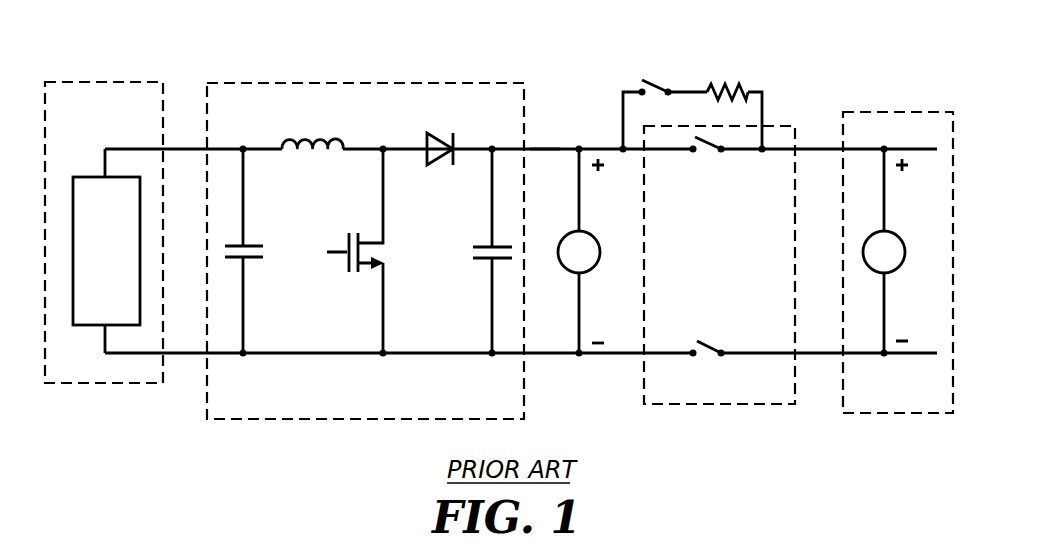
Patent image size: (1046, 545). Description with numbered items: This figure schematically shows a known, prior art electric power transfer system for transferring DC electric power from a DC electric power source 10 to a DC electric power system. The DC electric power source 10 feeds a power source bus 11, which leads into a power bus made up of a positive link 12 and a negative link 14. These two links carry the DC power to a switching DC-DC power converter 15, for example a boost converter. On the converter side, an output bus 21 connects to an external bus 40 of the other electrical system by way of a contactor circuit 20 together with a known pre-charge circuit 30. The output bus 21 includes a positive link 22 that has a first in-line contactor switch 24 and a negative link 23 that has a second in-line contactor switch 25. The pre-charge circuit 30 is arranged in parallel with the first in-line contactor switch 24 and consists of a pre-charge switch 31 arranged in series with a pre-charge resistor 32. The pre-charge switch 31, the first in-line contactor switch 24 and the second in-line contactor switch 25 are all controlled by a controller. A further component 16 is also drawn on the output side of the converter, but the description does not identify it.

The DC electric power source 10 is at (120, 266).
The power source bus 11 is at (146, 145).
The positive link 12 is at (173, 151).
The negative link 14 is at (178, 355).
The switching DC-DC power converter 15 is at (518, 411).
The output voltmeter 16 is at (565, 236).
The contactor circuit 20 is at (719, 265).
The output bus 21 is at (546, 145).
The positive link 22 is at (607, 145).
The negative link 23 is at (708, 158).
The first in-line contactor switch 24 is at (607, 356).
The second in-line contactor switch 25 is at (708, 340).
The pre-charge circuit 30 is at (739, 85).
The pre-charge switch 31 is at (660, 85).
The pre-charge resistor 32 is at (750, 82).
The external bus 40 is at (809, 144).